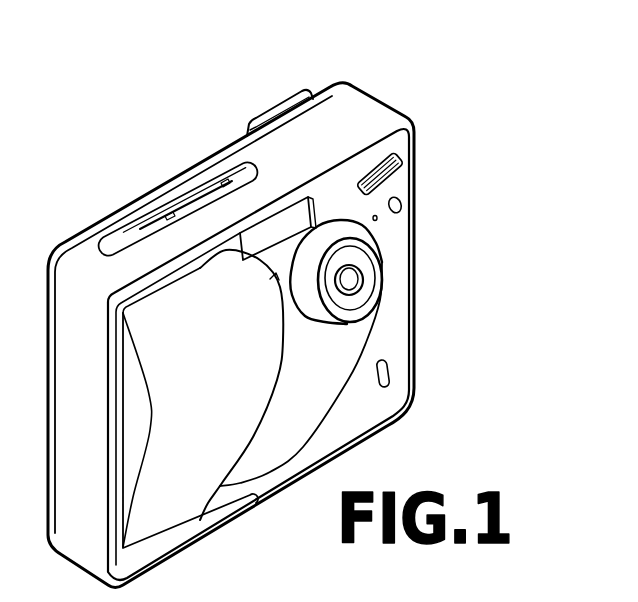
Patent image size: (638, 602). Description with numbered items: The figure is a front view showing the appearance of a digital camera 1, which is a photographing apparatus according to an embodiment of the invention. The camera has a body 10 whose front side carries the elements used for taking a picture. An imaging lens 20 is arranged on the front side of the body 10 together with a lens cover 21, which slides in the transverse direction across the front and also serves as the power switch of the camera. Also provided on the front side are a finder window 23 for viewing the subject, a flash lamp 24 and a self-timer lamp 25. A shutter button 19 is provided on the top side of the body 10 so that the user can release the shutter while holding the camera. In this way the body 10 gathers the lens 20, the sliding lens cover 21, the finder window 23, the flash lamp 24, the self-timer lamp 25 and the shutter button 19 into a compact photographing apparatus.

The digital camera 1 is at (164, 39).
The body 10 is at (379, 97).
The shutter button 19 is at (137, 230).
The imaging lens 20 is at (352, 278).
The lens cover 21 is at (186, 487).
The finder window 23 is at (401, 204).
The flash lamp 24 is at (401, 160).
The self-timer lamp 25 is at (389, 371).